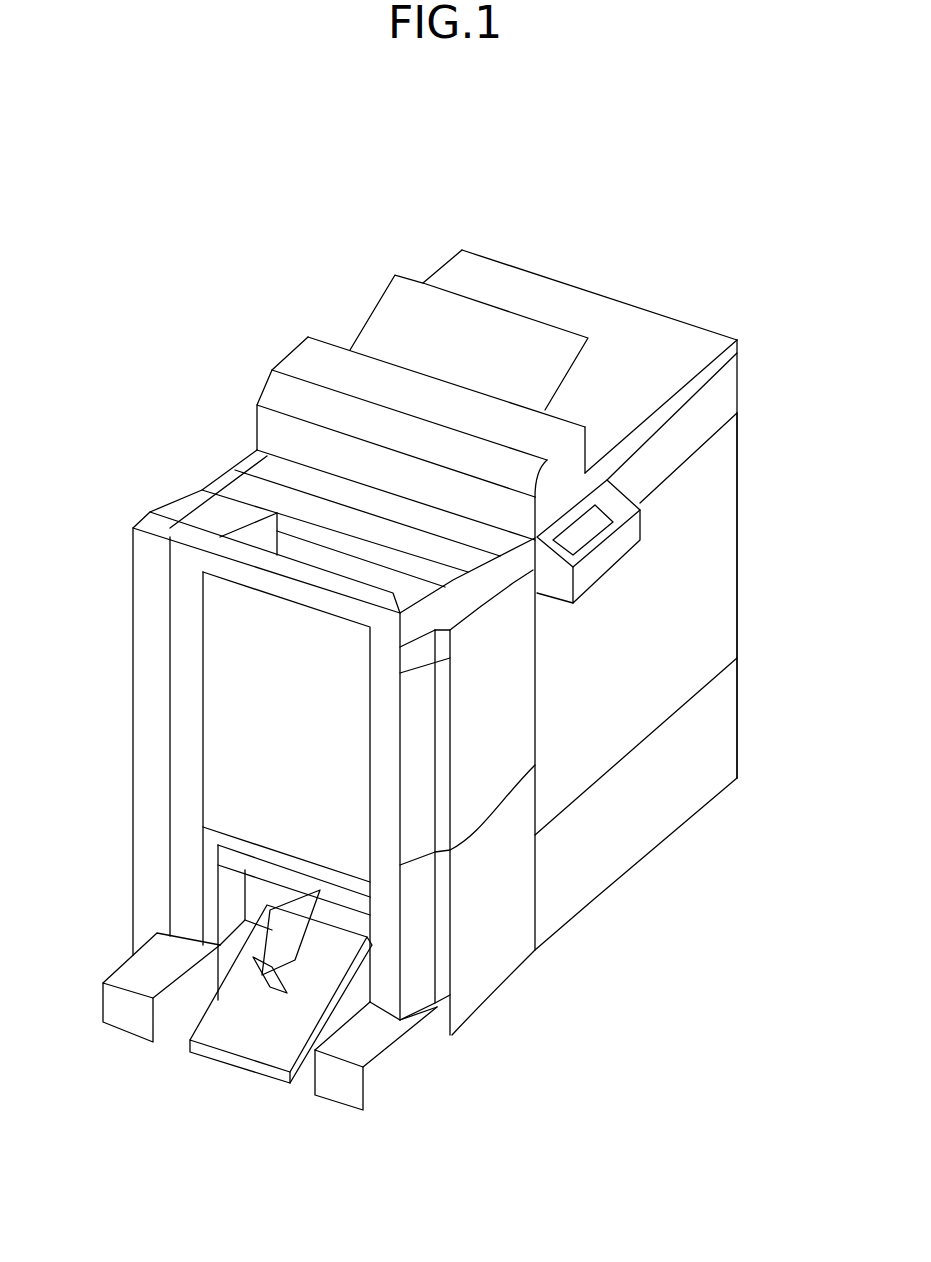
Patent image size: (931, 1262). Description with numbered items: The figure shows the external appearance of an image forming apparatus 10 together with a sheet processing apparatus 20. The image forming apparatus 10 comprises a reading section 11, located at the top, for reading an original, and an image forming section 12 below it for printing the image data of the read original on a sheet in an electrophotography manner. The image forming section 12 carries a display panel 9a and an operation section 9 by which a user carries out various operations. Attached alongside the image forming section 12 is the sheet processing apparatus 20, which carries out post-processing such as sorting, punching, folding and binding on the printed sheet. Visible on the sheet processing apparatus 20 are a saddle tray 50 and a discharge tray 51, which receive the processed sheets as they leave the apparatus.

The image forming apparatus 10 is at (283, 313).
The reading section 11 is at (755, 253).
The image forming section 12 is at (753, 415).
The operation section 9 is at (619, 559).
The display panel 9a is at (598, 527).
The saddle tray 50 is at (192, 977).
The discharge tray 51 is at (256, 533).
The sheet processing apparatus 20 is at (540, 968).